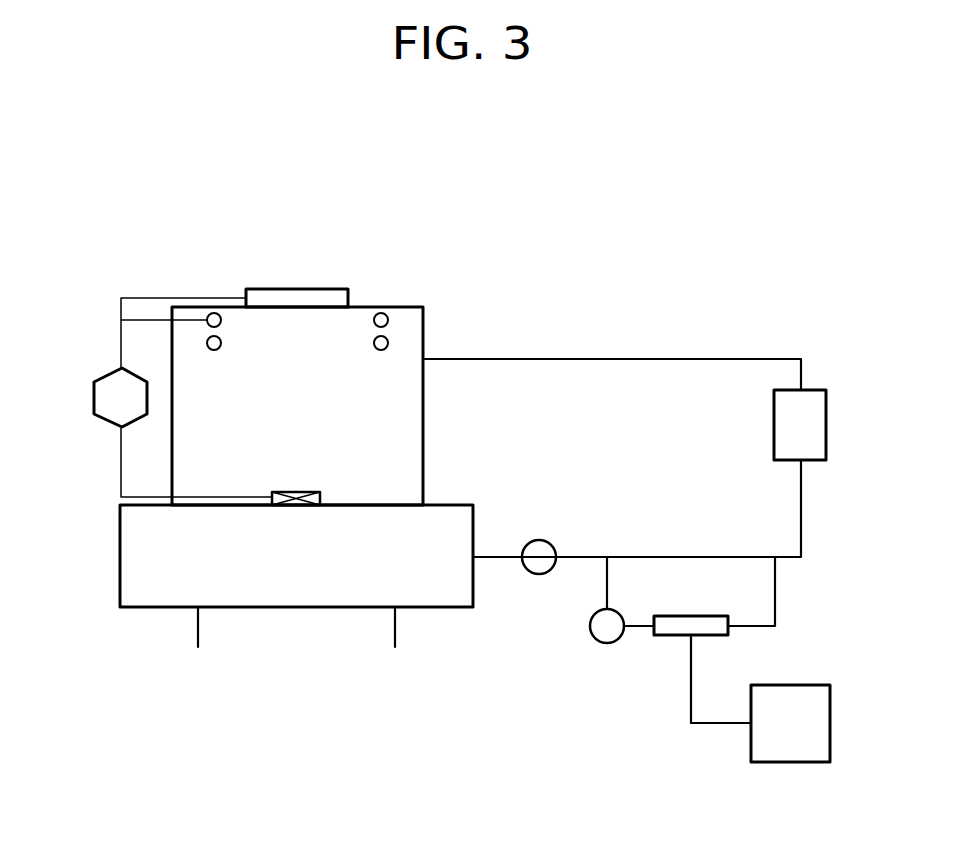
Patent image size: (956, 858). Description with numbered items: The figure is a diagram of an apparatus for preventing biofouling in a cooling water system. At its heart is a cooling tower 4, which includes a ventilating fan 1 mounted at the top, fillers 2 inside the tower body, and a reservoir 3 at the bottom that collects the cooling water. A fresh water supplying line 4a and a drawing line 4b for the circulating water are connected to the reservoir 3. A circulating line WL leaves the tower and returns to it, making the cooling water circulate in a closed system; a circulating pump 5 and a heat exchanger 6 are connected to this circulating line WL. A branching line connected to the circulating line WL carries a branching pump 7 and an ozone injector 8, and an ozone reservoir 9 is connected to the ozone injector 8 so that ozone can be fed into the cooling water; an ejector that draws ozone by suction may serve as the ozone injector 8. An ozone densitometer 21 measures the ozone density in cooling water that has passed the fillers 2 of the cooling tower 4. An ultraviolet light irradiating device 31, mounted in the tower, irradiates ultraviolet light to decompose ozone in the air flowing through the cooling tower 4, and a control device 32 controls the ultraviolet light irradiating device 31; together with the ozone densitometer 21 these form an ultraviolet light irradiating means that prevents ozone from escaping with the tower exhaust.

The ventilating fan 1 is at (312, 297).
The fillers 2 is at (218, 444).
The reservoir 3 is at (145, 562).
The cooling tower 4 is at (172, 268).
The fresh water supplying line 4a is at (392, 628).
The drawing line 4b is at (195, 628).
The ozone densitometer 21 is at (300, 490).
The ultraviolet light irradiating device 31 is at (215, 312).
The control device 32 is at (118, 380).
The circulating line WL is at (658, 359).
The circulating pump 5 is at (533, 564).
The heat exchanger 6 is at (812, 428).
The branching pump 7 is at (601, 630).
The ozone injector 8 is at (675, 628).
The ozone reservoir 9 is at (801, 747).